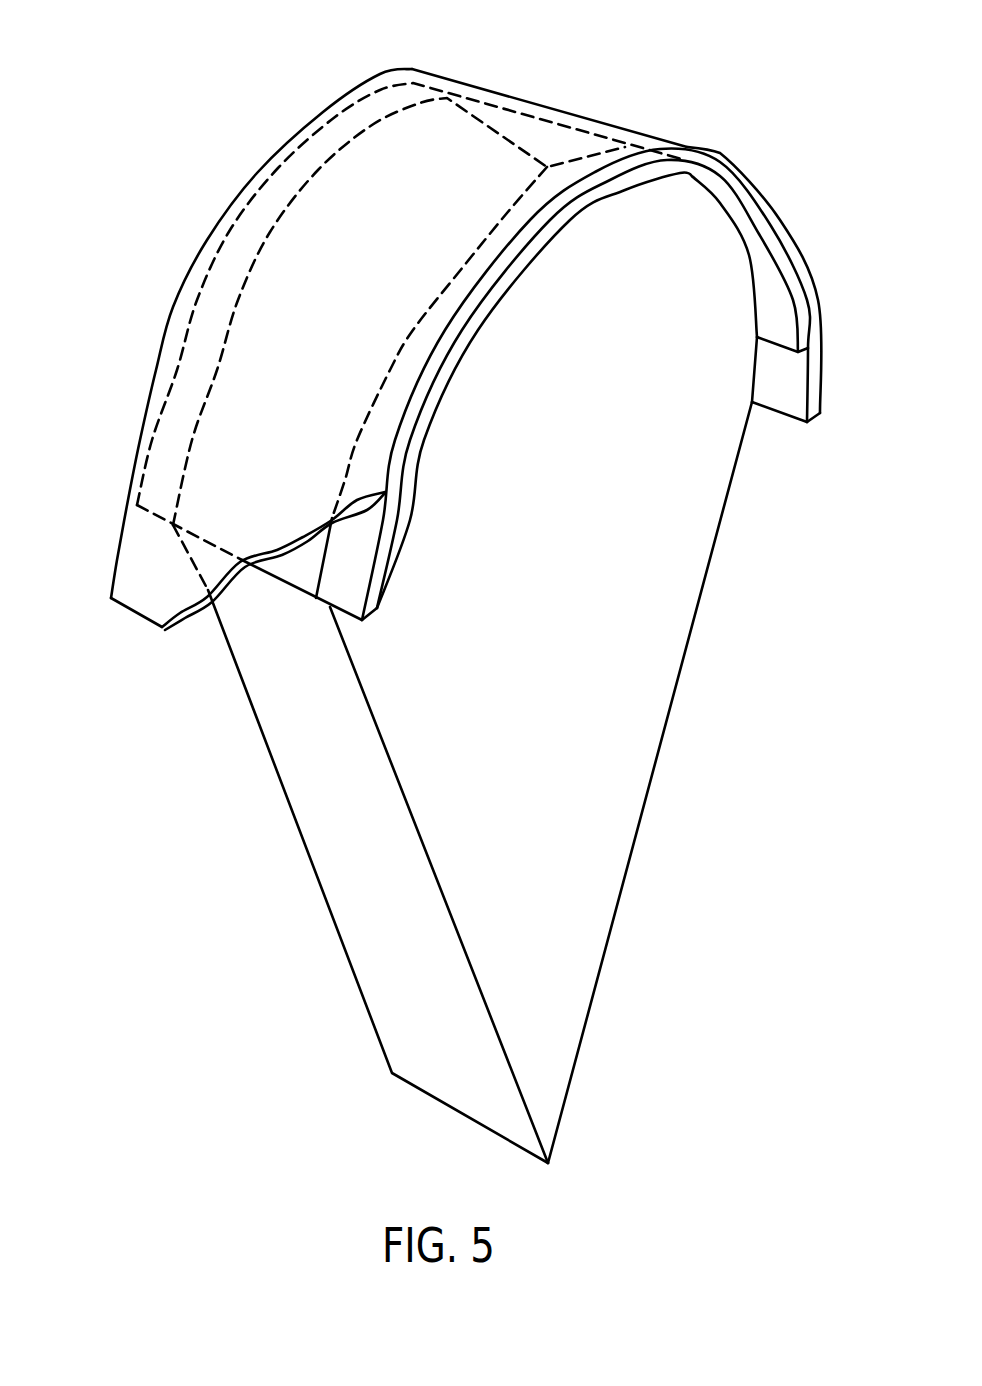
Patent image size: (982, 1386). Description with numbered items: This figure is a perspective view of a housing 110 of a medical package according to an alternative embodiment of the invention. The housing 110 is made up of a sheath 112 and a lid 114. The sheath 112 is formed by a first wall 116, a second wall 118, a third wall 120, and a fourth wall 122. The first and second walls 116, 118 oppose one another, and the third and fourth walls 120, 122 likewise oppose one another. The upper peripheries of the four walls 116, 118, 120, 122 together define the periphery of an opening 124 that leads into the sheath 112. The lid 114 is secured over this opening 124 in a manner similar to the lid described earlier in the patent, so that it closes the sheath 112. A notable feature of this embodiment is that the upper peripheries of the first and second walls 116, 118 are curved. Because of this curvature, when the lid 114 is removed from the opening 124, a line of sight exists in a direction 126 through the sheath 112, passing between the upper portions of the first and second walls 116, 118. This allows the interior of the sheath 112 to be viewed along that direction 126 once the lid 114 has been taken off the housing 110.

The housing 110 is at (452, 587).
The sheath 112 is at (440, 750).
The lid 114 is at (815, 403).
The first wall 116 is at (677, 750).
The second wall 118 is at (430, 142).
The third wall 120 is at (358, 880).
The fourth wall 122 is at (710, 674).
The opening 124 is at (359, 309).
The direction 126 is at (72, 519).